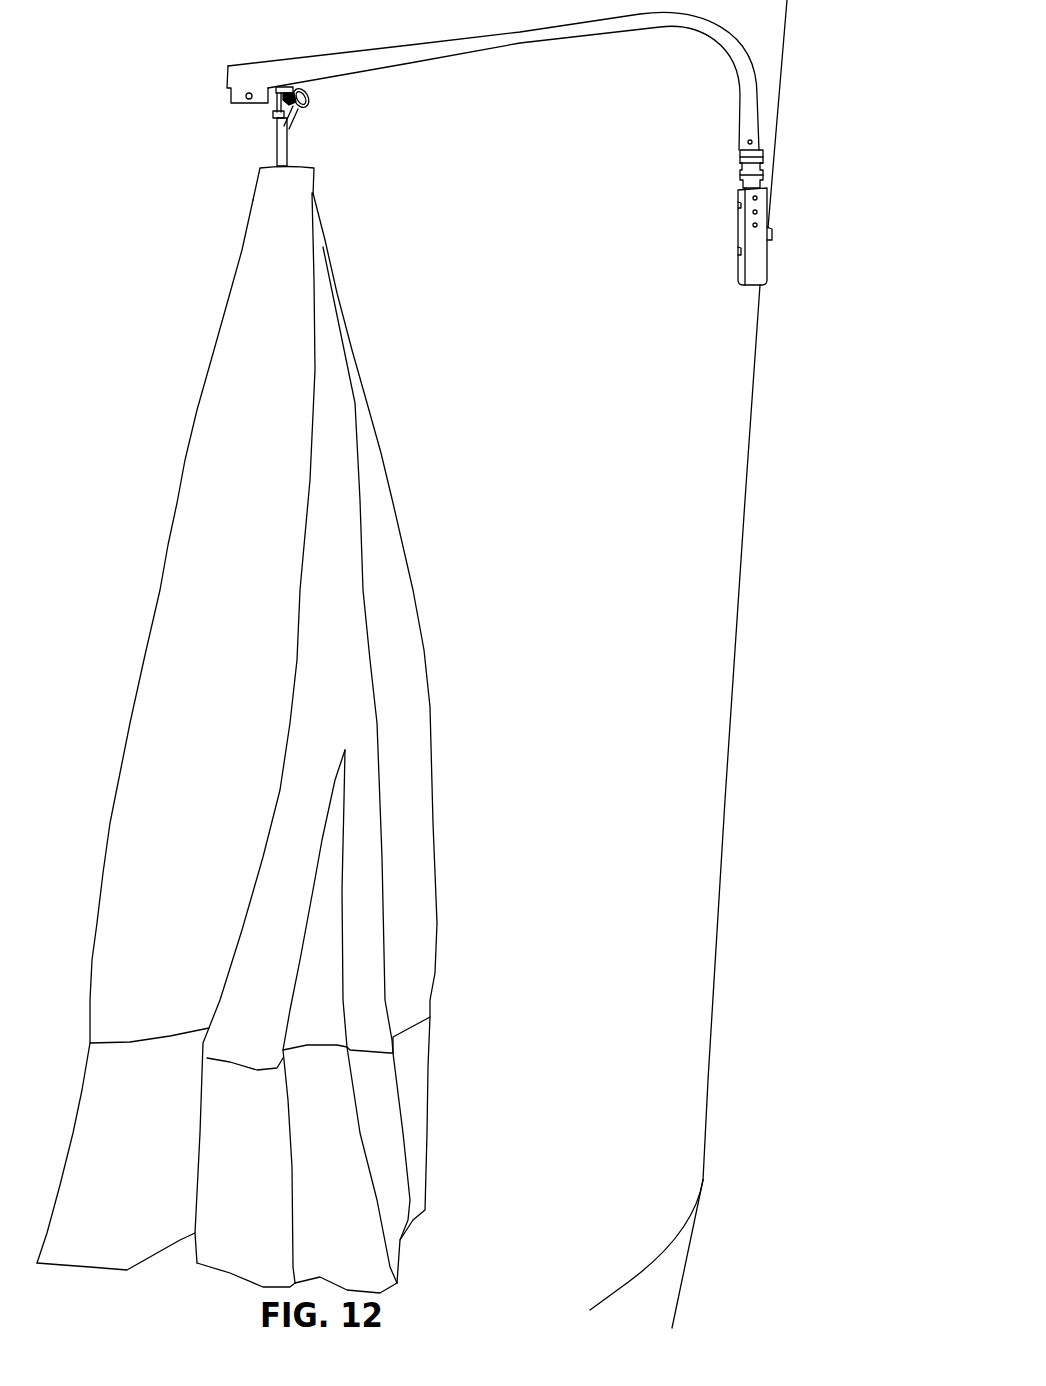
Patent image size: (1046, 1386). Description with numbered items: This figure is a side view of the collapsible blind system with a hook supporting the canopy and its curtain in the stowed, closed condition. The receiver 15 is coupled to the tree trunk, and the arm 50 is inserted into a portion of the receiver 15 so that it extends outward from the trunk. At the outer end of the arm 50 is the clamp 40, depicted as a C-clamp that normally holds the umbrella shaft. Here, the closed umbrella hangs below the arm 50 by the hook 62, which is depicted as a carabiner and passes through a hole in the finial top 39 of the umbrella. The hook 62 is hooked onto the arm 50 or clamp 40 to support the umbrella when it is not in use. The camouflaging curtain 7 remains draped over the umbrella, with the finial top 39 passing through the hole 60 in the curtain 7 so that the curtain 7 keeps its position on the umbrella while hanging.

The camouflaging curtain 7 is at (131, 897).
The receiver 15 is at (742, 222).
The finial top 39 is at (293, 148).
The clamp 40 is at (233, 64).
The arm 50 is at (286, 53).
The hole 60 is at (300, 167).
The hook 62 is at (266, 120).